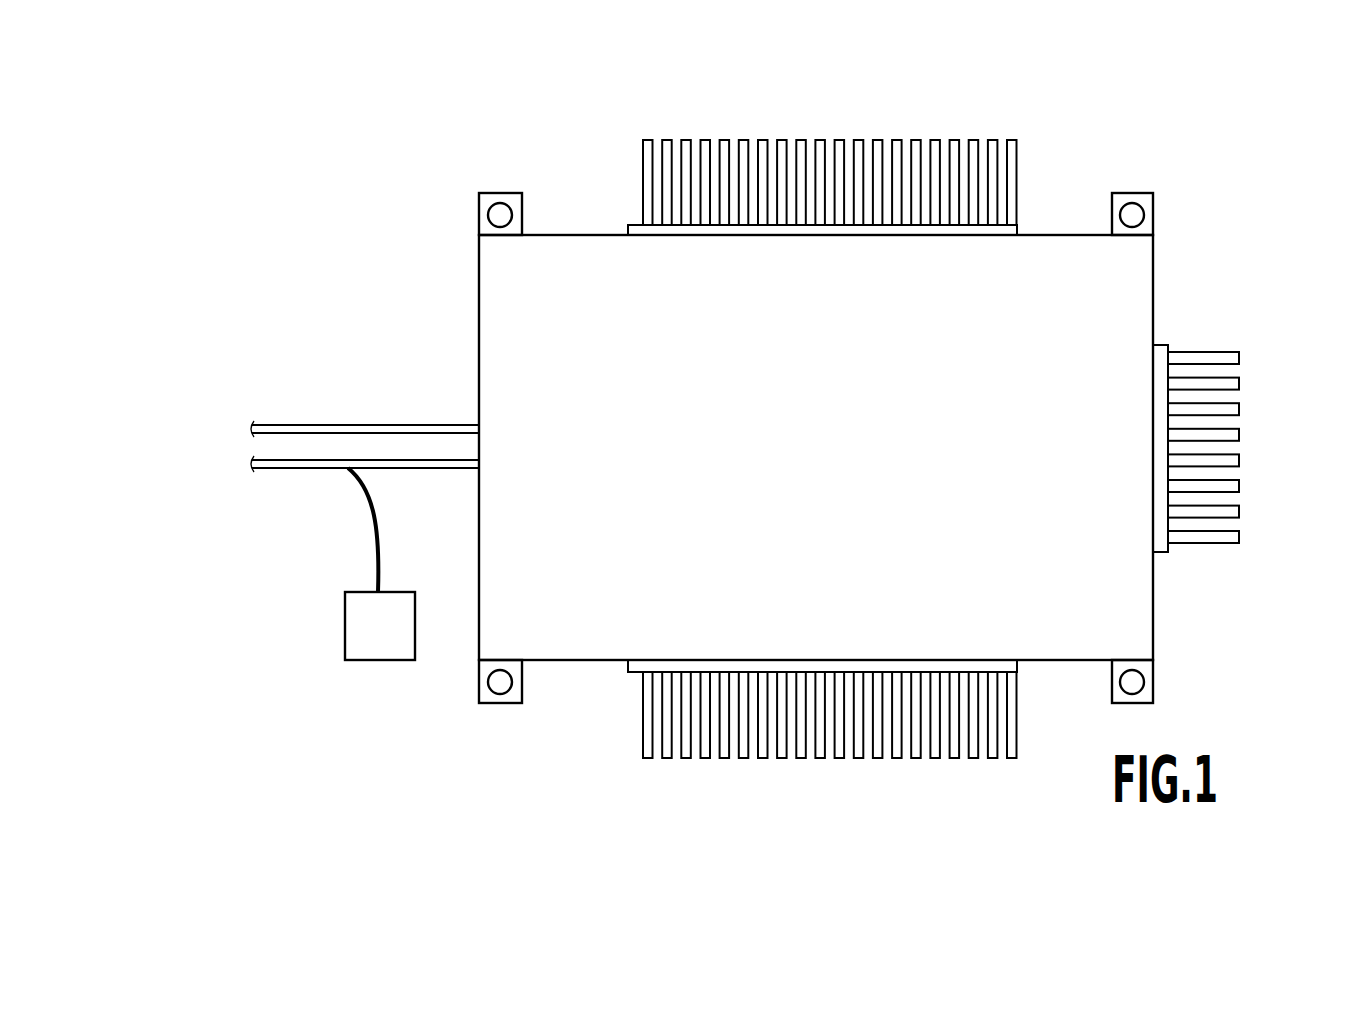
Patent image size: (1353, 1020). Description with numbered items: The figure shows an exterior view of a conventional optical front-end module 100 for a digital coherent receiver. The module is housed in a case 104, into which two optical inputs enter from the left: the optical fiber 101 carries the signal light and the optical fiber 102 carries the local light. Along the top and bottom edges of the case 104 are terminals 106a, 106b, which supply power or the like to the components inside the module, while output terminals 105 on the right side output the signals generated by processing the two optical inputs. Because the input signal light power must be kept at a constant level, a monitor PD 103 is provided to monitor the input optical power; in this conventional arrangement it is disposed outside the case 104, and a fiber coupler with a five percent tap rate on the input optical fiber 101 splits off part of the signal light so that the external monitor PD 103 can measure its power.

The front-end module 100 is at (1234, 162).
The optical input 101 is at (418, 468).
The optical input 102 is at (418, 425).
The monitor PD 103 is at (380, 661).
The case 104 is at (568, 235).
The output terminals 105 is at (1252, 342).
The terminal 106a is at (1023, 127).
The terminal 106b is at (1023, 767).